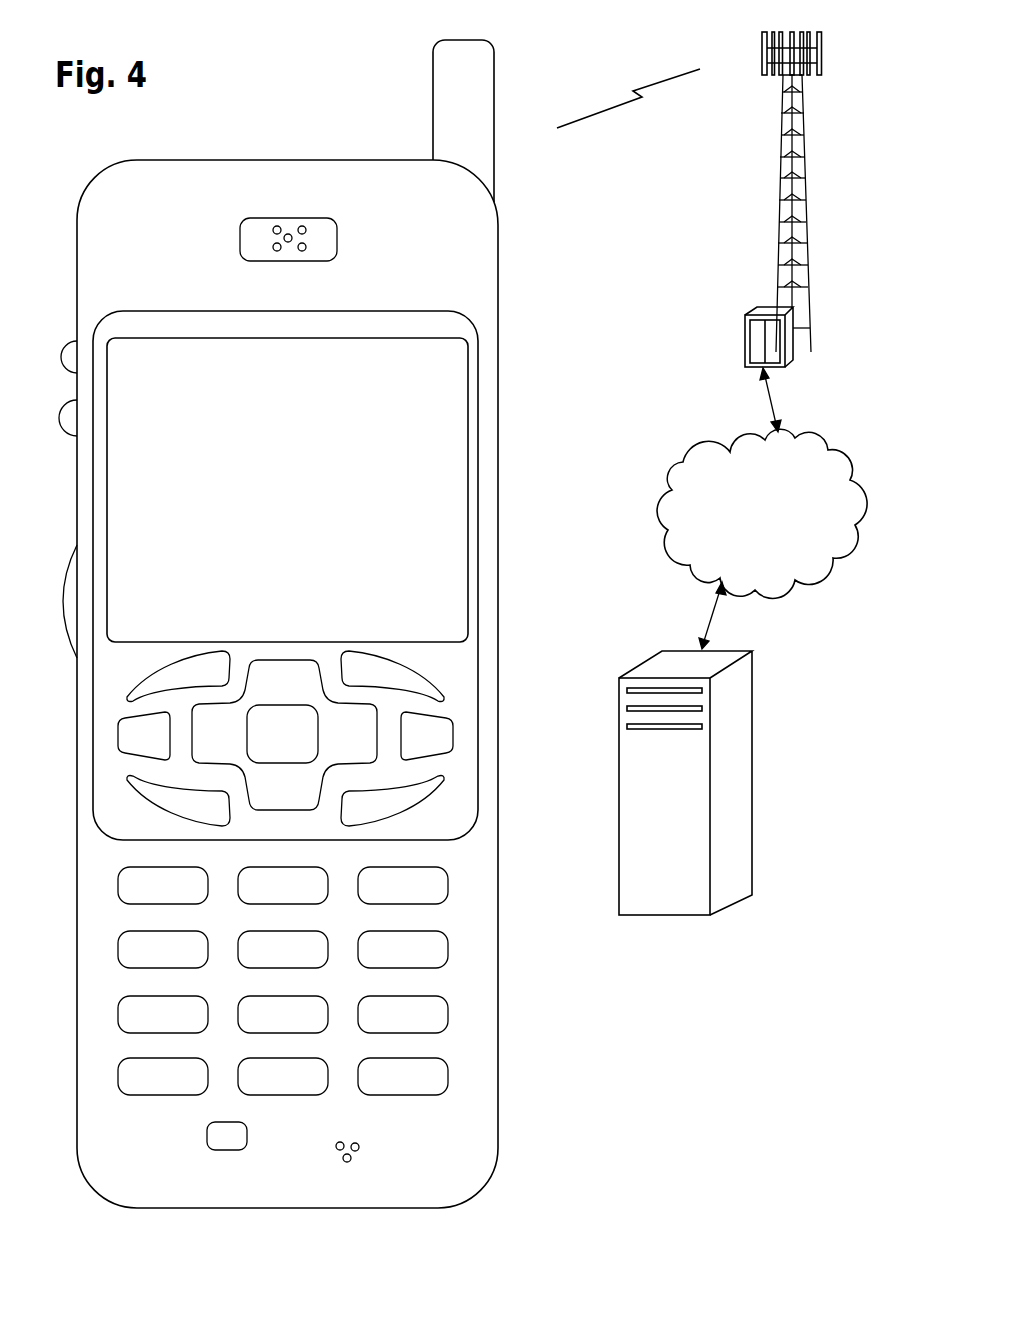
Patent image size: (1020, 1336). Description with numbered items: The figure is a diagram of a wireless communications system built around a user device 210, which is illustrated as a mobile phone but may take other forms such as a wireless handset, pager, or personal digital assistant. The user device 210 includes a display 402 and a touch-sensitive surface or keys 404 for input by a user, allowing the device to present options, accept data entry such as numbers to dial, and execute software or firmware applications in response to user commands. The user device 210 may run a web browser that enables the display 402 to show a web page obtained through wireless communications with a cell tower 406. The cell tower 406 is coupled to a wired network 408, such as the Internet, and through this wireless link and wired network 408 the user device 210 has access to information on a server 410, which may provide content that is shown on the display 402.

The user device 210 is at (117, 1205).
The display 402 is at (472, 352).
The keys 404 is at (507, 648).
The cell tower 406 is at (778, 213).
The wired network 408 is at (682, 562).
The server 410 is at (665, 915).